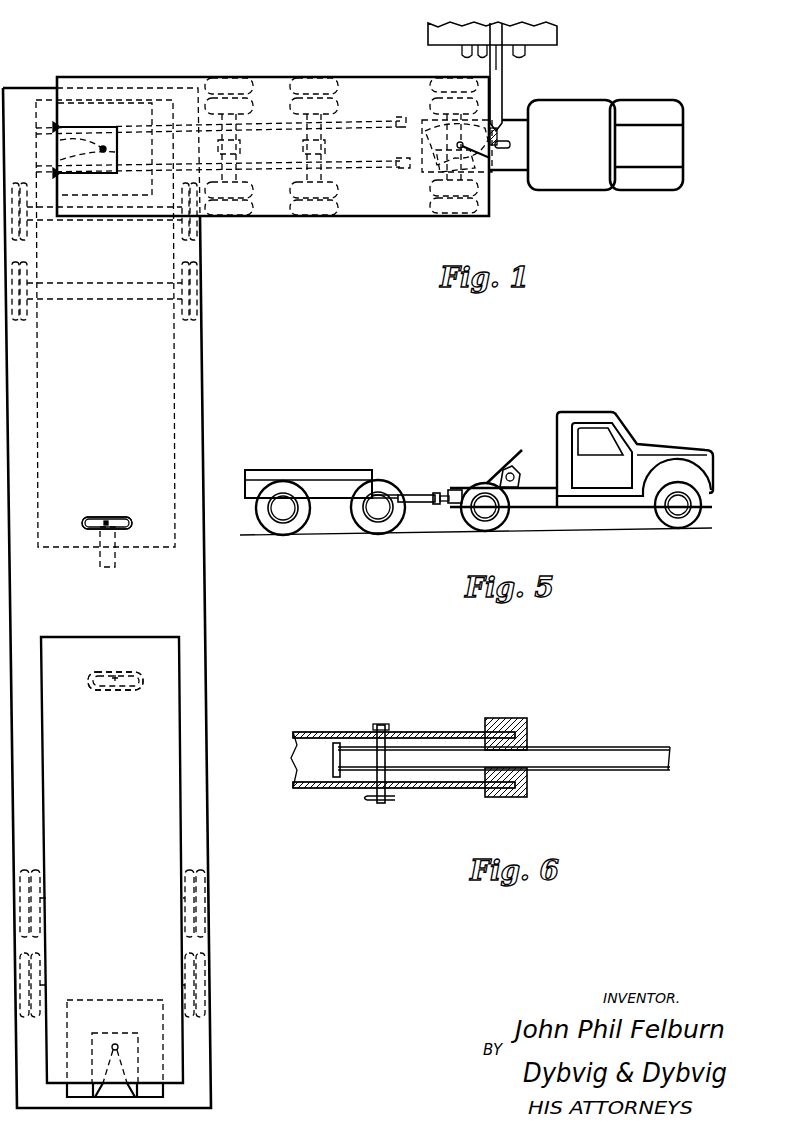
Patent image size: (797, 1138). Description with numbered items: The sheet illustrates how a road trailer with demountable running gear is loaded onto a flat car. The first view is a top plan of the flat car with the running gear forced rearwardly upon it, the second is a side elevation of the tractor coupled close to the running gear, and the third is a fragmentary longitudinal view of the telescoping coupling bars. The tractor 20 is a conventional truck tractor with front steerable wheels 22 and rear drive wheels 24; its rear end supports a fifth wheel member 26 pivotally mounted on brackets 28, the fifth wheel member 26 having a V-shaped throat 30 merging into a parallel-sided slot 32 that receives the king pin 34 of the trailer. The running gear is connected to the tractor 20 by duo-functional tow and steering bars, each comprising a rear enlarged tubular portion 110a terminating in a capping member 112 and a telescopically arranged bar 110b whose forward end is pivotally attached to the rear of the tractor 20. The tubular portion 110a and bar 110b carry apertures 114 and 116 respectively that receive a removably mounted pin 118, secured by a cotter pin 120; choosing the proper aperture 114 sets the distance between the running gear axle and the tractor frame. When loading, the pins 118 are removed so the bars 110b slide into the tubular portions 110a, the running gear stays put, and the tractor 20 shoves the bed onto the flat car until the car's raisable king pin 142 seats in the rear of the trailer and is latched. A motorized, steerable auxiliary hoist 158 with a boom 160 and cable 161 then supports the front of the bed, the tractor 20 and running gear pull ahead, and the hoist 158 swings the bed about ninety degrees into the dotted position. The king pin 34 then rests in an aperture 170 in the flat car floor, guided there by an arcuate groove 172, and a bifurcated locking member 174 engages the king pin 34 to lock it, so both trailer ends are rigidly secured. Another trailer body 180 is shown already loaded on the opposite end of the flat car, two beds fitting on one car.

In FIG. 5, the tractor 20 is at (598, 493).
In FIG. 5, the front steerable wheels 22 is at (678, 515).
In FIG. 5, the rear drive wheels 24 is at (490, 514).
In FIG. 5, the fifth wheel member 26 is at (506, 462).
In FIG. 5, the brackets 28 is at (518, 477).
In FIG. 1, the V-shaped throat 30 is at (437, 138).
In FIG. 1, the slot 32 is at (461, 148).
In FIG. 1, the king pin 34 is at (486, 160).
In FIG. 5, the rear enlarged tubular portion 110a is at (417, 497).
In FIG. 6, the rear enlarged tubular portion 110a is at (465, 732).
In FIG. 5, the telescopically arranged bar 110b is at (445, 495).
In FIG. 6, the telescopically arranged bar 110b is at (645, 746).
In FIG. 5, the capping member 112 is at (436, 504).
In FIG. 6, the capping member 112 is at (507, 720).
In FIG. 6, the apertures 114 is at (335, 722).
In FIG. 6, the apertures 116 is at (373, 783).
In FIG. 6, the pin 118 is at (380, 723).
In FIG. 6, the cotter pin 120 is at (392, 800).
In FIG. 1, the king pin 142 is at (108, 151).
In FIG. 1, the motorized auxiliary hoist 158 is at (547, 37).
In FIG. 1, the boom 160 is at (503, 84).
In FIG. 1, the cable 161 is at (488, 65).
In FIG. 1, the aperture 170 is at (105, 517).
In FIG. 1, the arcuate groove 172 is at (122, 516).
In FIG. 1, the bifurcated locking member 174 is at (98, 548).
In FIG. 1, the trailer body 180 is at (181, 808).